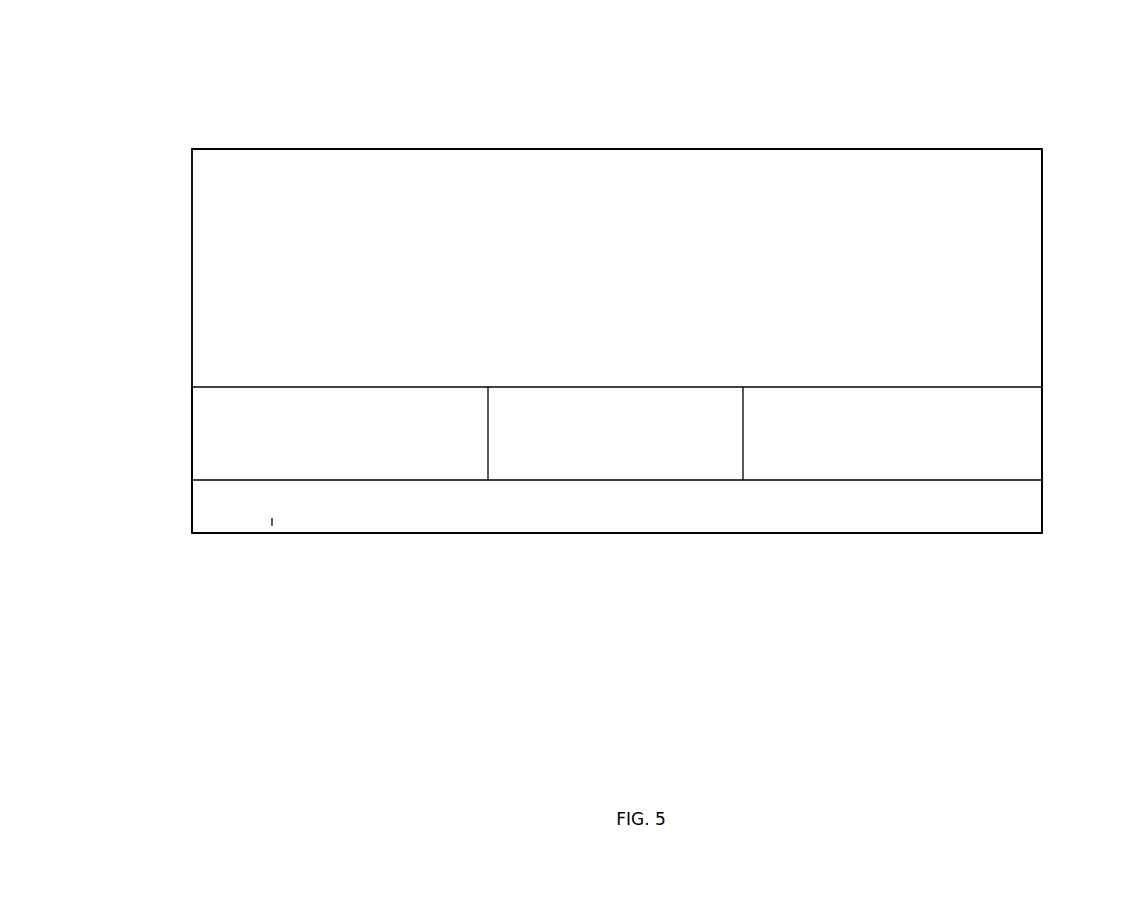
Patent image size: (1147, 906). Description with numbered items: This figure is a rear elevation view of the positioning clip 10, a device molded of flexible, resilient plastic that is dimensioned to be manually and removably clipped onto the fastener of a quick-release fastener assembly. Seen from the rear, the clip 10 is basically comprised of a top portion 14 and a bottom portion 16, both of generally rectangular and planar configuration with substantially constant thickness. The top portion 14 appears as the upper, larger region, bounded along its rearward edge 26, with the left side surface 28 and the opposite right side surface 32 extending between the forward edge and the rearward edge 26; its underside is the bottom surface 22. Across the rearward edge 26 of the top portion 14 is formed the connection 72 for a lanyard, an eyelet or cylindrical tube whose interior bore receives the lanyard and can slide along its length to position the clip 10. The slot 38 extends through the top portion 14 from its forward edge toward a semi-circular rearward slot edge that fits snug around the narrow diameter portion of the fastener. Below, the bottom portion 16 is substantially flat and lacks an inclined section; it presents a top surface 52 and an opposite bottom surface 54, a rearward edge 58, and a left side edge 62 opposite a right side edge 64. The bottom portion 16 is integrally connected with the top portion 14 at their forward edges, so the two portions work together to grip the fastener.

The positioning clip 10 is at (899, 123).
The connection 72 is at (458, 148).
The rearward edge 26 is at (1042, 360).
The left side surface 28 is at (1042, 419).
The left side edge 62 is at (1042, 511).
The right side surface 32 is at (192, 413).
The right side edge 64 is at (192, 513).
The bottom surface 22 is at (581, 388).
The top portion 14 is at (489, 430).
The top surface 52 is at (518, 479).
The slot 38 is at (689, 454).
The bottom portion 16 is at (398, 534).
The bottom surface 54 is at (507, 535).
The rearward edge 58 is at (841, 520).